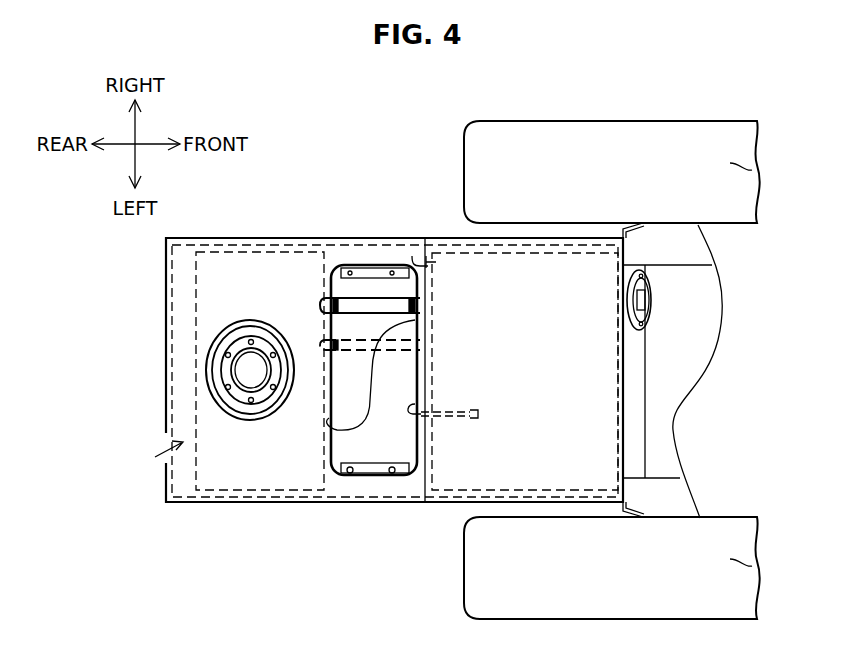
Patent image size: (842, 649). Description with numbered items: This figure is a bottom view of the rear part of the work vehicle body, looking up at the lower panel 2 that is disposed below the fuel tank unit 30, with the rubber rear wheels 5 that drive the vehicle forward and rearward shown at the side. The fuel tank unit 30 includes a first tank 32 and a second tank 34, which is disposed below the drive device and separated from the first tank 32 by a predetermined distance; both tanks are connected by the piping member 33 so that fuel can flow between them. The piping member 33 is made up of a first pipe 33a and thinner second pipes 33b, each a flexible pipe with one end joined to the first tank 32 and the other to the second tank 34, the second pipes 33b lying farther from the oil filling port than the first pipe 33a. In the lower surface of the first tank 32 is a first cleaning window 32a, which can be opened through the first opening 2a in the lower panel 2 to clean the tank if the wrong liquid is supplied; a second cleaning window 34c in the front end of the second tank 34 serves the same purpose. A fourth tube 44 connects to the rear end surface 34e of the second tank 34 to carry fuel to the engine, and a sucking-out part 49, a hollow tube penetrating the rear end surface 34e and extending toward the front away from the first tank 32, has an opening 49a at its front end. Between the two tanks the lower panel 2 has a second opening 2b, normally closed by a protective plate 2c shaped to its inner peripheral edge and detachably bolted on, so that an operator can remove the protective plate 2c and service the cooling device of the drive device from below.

The lower panel 2 is at (164, 395).
The first opening 2a is at (231, 404).
The second opening 2b is at (330, 412).
The protective plate 2c is at (372, 482).
The rear wheel 5 is at (757, 166).
The fuel tank unit 30 is at (155, 457).
The first tank 32 is at (216, 482).
The first cleaning window 32a is at (262, 396).
The piping member 33 is at (320, 306).
The first pipe 33a is at (331, 302).
The second pipe 33b is at (331, 344).
The second tank 34 is at (448, 482).
The second cleaning window 34c is at (652, 300).
The rear end surface 34e is at (420, 480).
The fourth tube 44 is at (412, 256).
The sucking-out part 49 is at (472, 420).
The opening 49a is at (478, 412).